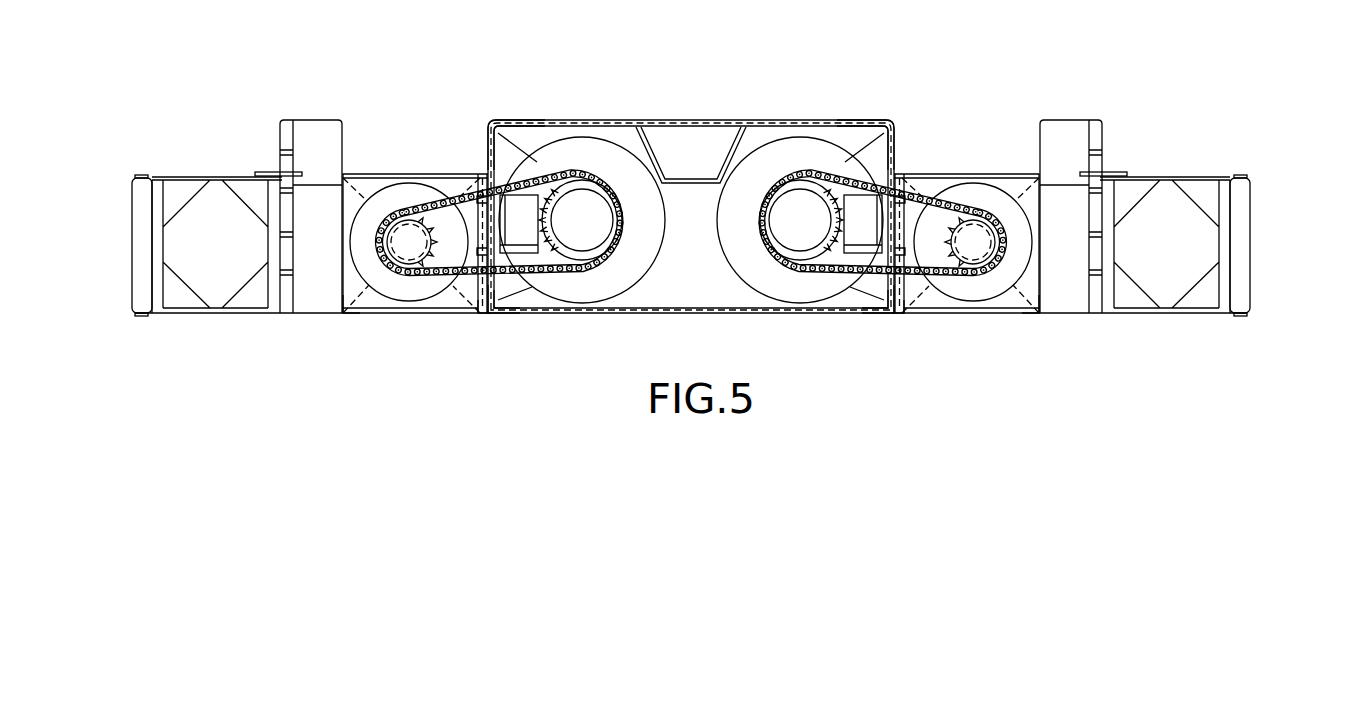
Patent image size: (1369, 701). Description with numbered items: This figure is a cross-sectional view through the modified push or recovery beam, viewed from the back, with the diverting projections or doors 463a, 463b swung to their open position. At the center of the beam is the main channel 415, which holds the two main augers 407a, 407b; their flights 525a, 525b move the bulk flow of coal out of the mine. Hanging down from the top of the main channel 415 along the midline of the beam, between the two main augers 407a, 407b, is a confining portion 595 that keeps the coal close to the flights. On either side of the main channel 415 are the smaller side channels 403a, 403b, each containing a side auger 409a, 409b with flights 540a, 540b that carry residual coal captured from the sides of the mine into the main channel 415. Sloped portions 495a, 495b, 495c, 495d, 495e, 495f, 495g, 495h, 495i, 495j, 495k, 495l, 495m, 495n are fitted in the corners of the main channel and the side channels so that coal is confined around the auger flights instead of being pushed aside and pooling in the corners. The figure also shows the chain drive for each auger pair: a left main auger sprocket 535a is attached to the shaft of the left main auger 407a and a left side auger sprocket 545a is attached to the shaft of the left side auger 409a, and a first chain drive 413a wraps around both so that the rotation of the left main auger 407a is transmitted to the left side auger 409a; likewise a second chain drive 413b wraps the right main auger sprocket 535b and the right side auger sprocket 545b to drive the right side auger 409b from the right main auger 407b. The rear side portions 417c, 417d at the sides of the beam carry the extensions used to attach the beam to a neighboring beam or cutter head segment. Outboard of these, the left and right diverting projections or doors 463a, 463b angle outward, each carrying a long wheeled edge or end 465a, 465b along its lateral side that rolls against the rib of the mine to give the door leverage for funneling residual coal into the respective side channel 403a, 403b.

The left side channel 403a is at (443, 183).
The right side channel 403b is at (940, 183).
The left main auger 407a is at (585, 233).
The right main auger 407b is at (797, 233).
The left side auger 409a is at (412, 248).
The right side auger 409b is at (970, 248).
The first chain drive 413a is at (432, 273).
The second chain drive 413b is at (952, 273).
The main channel 415 is at (693, 273).
The rear side portion 417c is at (307, 222).
The rear side portion 417d is at (1075, 222).
The left diverting projection or door 463a is at (207, 203).
The right diverting projection or door 463b is at (1177, 203).
The wheeled edge or end 465a is at (135, 238).
The wheeled edge or end 465b is at (1245, 238).
The sloped portion 495a is at (352, 312).
The sloped portion 495b is at (468, 315).
The sloped portion 495c is at (503, 298).
The sloped portion 495d is at (880, 298).
The sloped portion 495e is at (905, 315).
The sloped portion 495f is at (1030, 312).
The sloped portion 495g is at (507, 299).
The sloped portion 495h is at (875, 299).
The sloped portion 495i is at (352, 177).
The sloped portion 495j is at (475, 182).
The sloped portion 495k is at (503, 133).
The sloped portion 495l is at (876, 133).
The sloped portion 495m is at (920, 177).
The sloped portion 495n is at (1030, 177).
The flights of the left main auger 525a is at (607, 152).
The flights of the right main auger 525b is at (775, 152).
The left main auger sprocket 535a is at (571, 170).
The right main auger sprocket 535b is at (812, 170).
The flights of the left side auger 540a is at (397, 293).
The flights of the right side auger 540b is at (985, 293).
The left side auger sprocket 545a is at (405, 222).
The right side auger sprocket 545b is at (978, 222).
The confining portion 595 is at (692, 175).